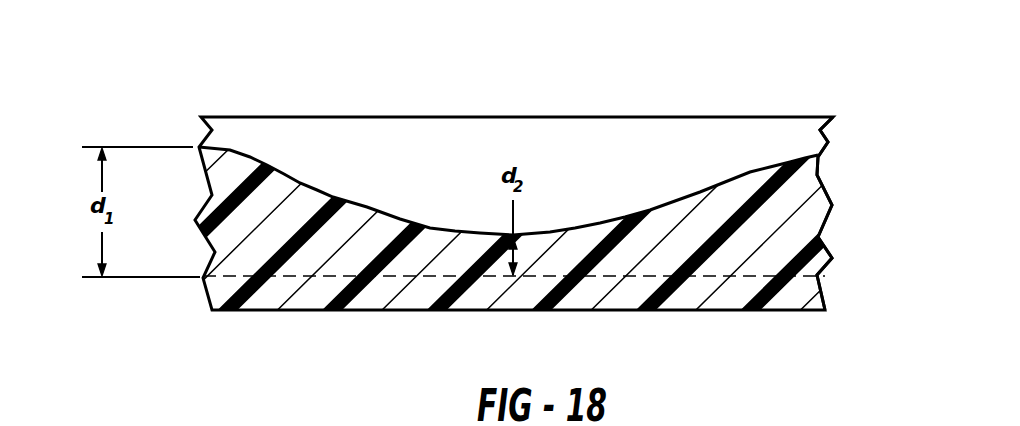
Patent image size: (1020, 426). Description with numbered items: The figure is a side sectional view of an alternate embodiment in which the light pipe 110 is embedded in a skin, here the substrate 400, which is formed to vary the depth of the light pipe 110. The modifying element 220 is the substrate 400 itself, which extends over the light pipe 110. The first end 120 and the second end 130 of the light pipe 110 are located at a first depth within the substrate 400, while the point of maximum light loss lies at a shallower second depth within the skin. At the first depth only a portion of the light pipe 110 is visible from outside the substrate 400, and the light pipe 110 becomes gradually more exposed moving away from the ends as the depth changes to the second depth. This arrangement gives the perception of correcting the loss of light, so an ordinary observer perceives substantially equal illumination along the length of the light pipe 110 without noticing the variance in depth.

The light pipe 110 is at (350, 98).
The first end 120 is at (187, 288).
The second end 130 is at (843, 223).
The modifying element 220 is at (359, 244).
The substrate 400 is at (702, 295).